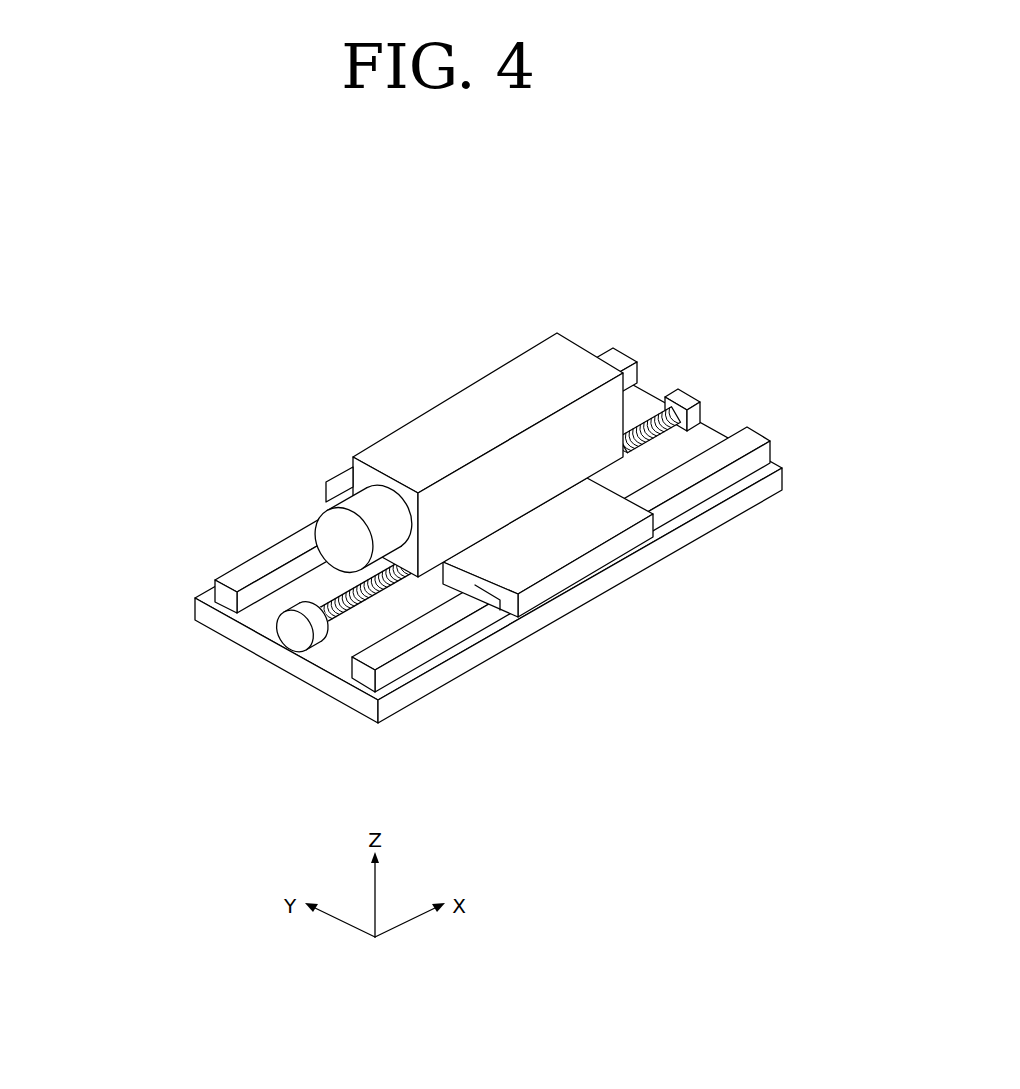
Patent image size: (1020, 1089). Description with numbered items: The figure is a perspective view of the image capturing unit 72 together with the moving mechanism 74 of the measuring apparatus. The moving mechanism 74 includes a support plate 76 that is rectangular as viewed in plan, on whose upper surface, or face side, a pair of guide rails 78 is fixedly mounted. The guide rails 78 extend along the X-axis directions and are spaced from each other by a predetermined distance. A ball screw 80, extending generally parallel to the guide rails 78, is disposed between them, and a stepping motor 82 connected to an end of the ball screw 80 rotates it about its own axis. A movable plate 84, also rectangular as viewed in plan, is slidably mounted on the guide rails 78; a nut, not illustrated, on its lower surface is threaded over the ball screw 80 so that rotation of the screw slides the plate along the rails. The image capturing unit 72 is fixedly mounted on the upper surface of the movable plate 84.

The image capturing unit 72 is at (457, 410).
The moving mechanism 74 is at (431, 541).
The support plate 76 is at (420, 687).
The guide rails 78 is at (425, 526).
The ball screw 80 is at (645, 414).
The stepping motor 82 is at (308, 612).
The movable plate 84 is at (558, 548).